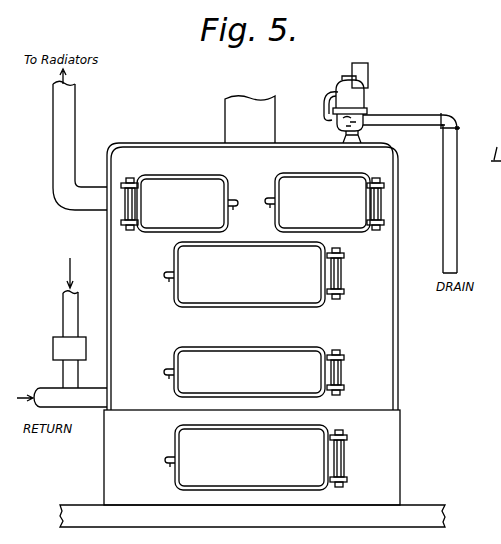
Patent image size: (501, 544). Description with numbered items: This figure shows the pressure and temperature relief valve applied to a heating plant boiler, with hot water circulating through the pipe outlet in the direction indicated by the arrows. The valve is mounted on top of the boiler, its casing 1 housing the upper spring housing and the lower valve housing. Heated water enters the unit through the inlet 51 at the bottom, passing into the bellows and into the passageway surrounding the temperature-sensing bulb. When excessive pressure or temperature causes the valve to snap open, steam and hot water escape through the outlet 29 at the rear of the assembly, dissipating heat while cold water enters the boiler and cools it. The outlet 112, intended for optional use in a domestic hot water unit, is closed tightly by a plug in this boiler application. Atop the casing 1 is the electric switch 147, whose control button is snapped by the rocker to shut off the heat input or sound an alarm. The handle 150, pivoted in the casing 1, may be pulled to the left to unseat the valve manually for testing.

The casing 1 is at (340, 91).
The electric switch 147 is at (363, 87).
The handle 150 is at (325, 98).
The outlet 112 is at (367, 116).
The outlet 29 is at (337, 123).
The inlet 51 is at (360, 136).